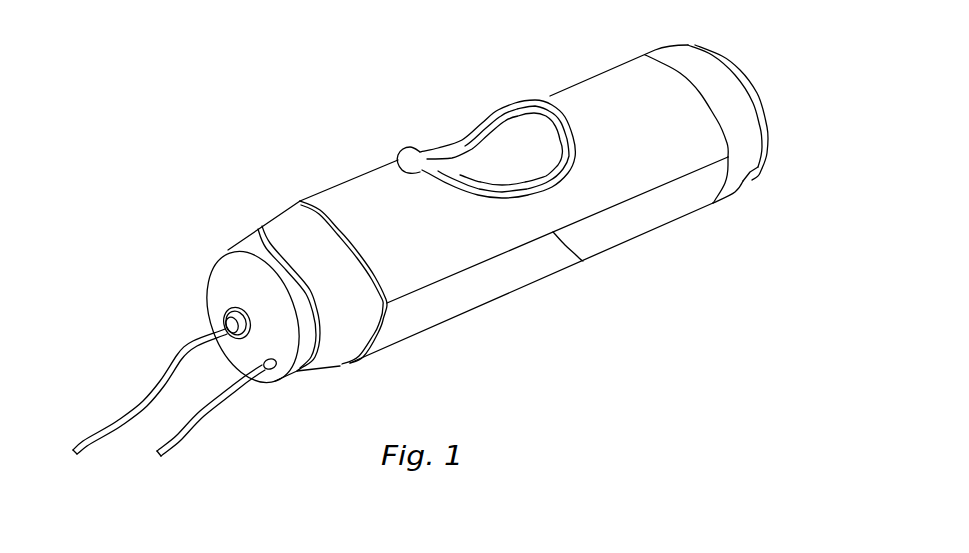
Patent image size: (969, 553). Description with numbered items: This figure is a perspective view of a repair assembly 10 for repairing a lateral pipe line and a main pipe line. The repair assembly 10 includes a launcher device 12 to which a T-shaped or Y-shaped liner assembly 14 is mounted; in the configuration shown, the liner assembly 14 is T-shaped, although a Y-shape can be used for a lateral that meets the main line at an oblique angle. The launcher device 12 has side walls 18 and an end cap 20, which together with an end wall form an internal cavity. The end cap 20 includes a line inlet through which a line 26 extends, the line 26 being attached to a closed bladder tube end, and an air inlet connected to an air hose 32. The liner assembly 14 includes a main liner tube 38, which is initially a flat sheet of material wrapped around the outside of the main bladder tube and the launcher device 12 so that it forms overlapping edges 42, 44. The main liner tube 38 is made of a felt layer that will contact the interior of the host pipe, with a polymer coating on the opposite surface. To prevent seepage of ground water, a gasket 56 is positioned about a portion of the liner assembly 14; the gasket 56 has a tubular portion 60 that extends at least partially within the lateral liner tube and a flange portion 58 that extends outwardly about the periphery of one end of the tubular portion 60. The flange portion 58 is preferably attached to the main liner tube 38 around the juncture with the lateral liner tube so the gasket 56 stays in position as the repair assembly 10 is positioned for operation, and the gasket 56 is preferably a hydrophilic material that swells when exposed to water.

The repair assembly 10 is at (259, 200).
The launcher device 12 is at (226, 248).
The liner assembly 14 is at (576, 76).
The side walls 18 is at (280, 223).
The end cap 20 is at (215, 300).
The line 26 is at (122, 415).
The air hose 32 is at (183, 432).
The main liner tube 38 is at (500, 294).
The overlapping edge 42 is at (577, 260).
The overlapping edge 44 is at (370, 277).
The gasket 56 is at (405, 145).
The flange portion 58 is at (523, 100).
The tubular portion 60 is at (488, 140).